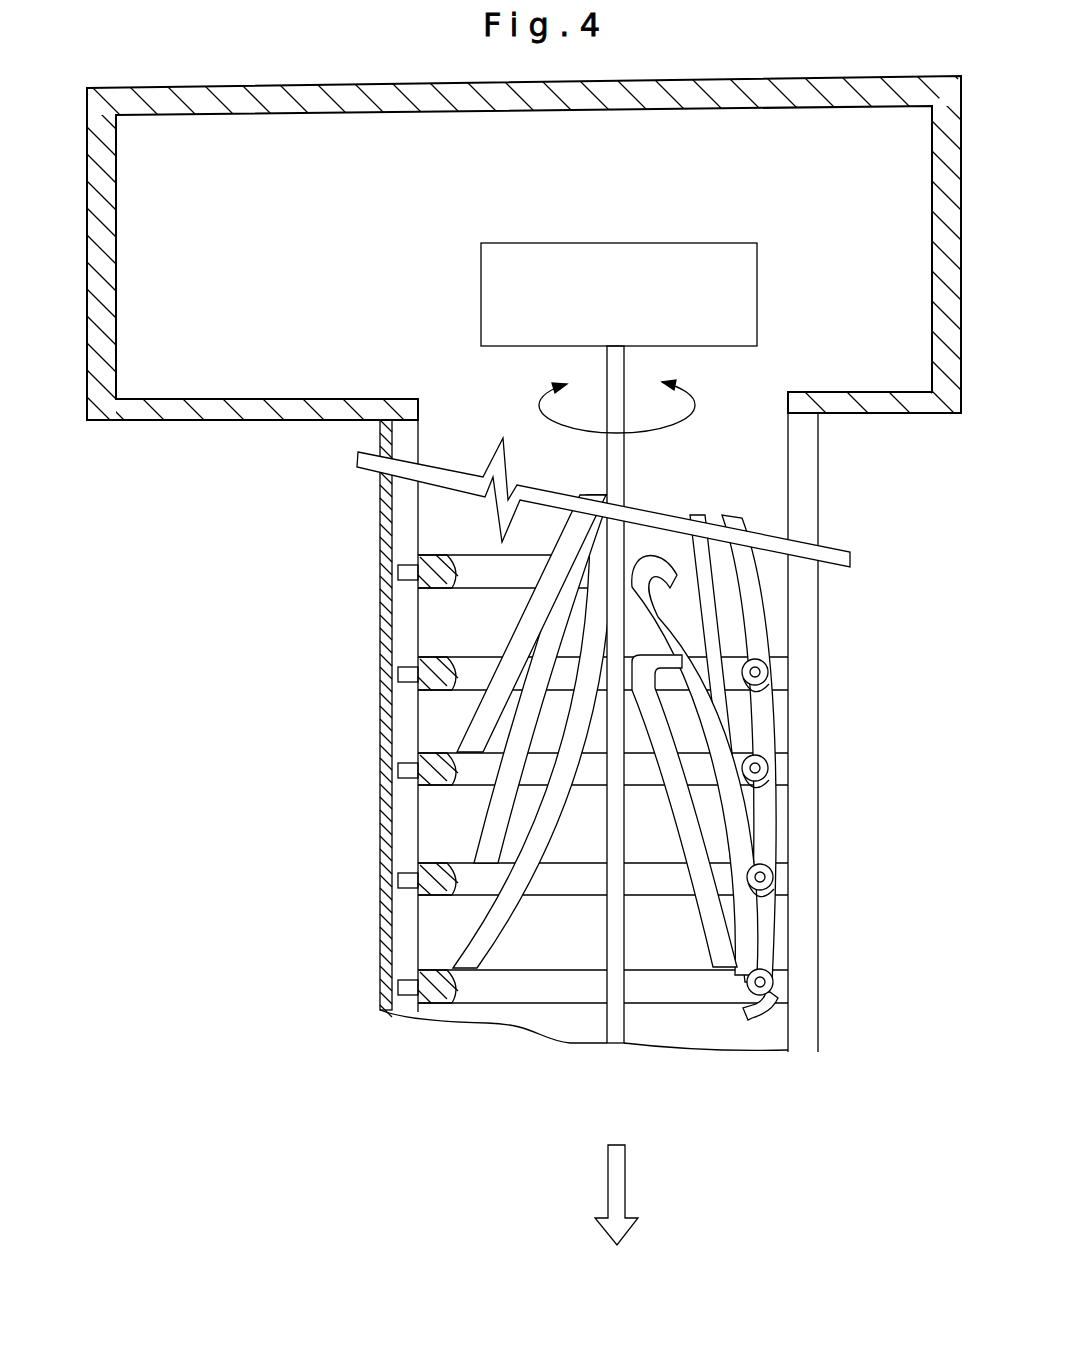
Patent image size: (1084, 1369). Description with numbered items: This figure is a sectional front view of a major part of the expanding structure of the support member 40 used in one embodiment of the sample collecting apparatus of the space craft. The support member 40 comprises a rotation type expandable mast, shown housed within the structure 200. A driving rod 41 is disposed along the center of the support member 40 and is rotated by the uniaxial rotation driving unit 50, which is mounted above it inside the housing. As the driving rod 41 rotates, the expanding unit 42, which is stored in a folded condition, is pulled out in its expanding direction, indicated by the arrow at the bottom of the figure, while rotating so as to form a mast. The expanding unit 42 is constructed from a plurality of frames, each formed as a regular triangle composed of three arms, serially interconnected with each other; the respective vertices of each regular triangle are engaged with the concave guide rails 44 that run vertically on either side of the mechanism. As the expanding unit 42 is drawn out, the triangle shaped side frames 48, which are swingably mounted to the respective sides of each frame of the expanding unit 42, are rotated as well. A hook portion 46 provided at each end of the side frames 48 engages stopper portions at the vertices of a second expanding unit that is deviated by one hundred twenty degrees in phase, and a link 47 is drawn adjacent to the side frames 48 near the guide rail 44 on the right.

The housing 200 is at (166, 413).
The support member 40 is at (350, 481).
The driving rod 41 is at (628, 487).
The expanding unit 42 is at (673, 1085).
The concave guide rails 44 is at (865, 660).
The hook portion 46 is at (652, 565).
The link 47 is at (752, 950).
The side frames 48 is at (738, 607).
The uniaxial rotation driving unit 50 is at (705, 243).